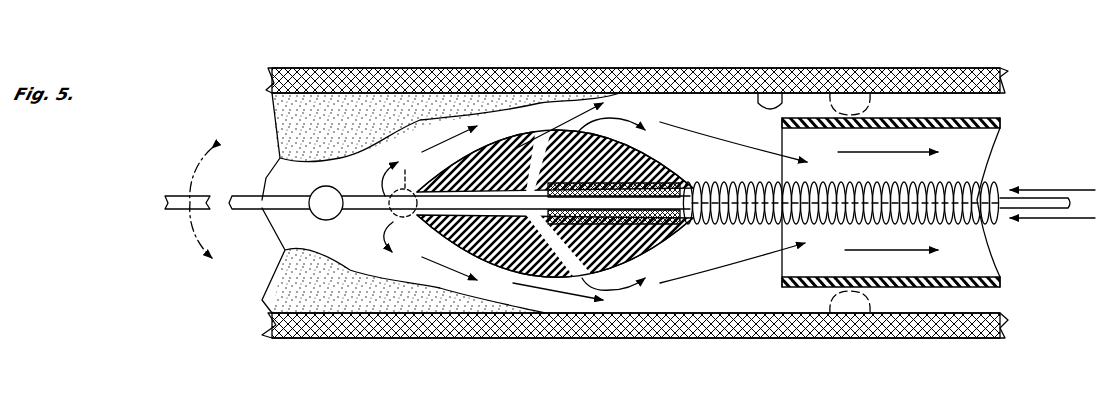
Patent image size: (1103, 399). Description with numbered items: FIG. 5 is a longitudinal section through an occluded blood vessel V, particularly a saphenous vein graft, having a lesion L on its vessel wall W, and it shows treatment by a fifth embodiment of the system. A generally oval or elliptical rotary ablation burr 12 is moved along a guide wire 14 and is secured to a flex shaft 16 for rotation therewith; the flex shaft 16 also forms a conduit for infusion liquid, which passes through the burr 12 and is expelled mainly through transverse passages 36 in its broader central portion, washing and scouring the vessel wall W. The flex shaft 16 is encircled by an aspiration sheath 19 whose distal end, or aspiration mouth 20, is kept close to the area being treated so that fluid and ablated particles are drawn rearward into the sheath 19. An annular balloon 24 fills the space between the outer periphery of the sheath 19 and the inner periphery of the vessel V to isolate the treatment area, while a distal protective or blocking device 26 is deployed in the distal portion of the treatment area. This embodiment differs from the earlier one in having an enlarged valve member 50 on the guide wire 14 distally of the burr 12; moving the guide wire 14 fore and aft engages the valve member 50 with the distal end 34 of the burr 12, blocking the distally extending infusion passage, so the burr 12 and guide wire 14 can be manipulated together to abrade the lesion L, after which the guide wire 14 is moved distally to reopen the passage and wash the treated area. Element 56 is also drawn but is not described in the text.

The rotary ablation burr 12 is at (523, 160).
The guide wire 14 is at (247, 209).
The flex shaft 16 is at (1002, 200).
The aspiration sheath 19 is at (1002, 118).
The aspiration mouth 20 is at (765, 280).
The annular balloon 24 is at (850, 108).
The distal protective or blocking device 26 is at (212, 148).
The distal end of the burr 34 is at (405, 170).
The transverse passages 36 is at (648, 145).
The enlarged valve member 50 is at (326, 186).
The port 56 is at (581, 246).
The lesion L is at (385, 113).
The blood vessel V is at (730, 80).
The vessel wall W is at (785, 95).